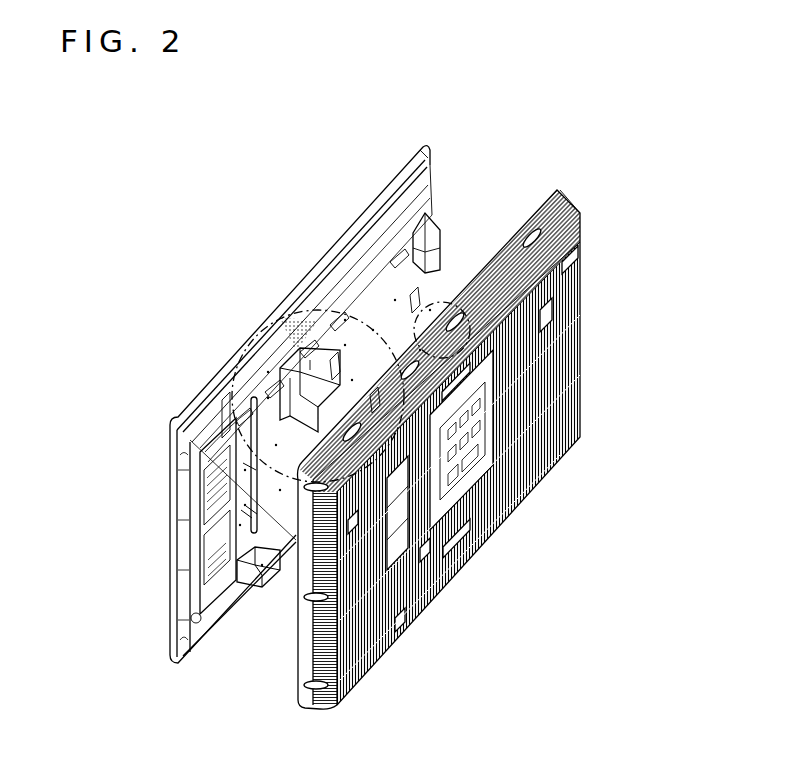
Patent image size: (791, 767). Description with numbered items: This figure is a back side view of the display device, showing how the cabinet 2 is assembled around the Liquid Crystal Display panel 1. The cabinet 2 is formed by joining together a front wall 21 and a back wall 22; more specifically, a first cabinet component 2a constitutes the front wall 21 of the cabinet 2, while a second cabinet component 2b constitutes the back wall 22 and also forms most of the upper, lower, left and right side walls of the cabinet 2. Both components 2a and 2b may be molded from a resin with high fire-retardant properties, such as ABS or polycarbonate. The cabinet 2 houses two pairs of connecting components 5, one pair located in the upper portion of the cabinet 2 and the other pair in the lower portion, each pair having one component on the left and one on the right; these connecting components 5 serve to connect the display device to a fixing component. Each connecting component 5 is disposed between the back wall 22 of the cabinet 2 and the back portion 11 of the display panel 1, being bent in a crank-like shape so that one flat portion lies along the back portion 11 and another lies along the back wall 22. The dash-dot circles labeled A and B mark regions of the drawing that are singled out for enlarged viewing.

The Liquid Crystal Display panel 1 is at (200, 625).
The cabinet 2 is at (483, 383).
The first cabinet component 2a is at (423, 143).
The second cabinet component 2b is at (483, 405).
The connecting component 5 is at (423, 253).
The back portion 11 is at (388, 288).
The front wall 21 is at (348, 218).
The back wall 22 is at (570, 320).
The enlarged view region A is at (240, 367).
The enlarged view region B is at (450, 307).